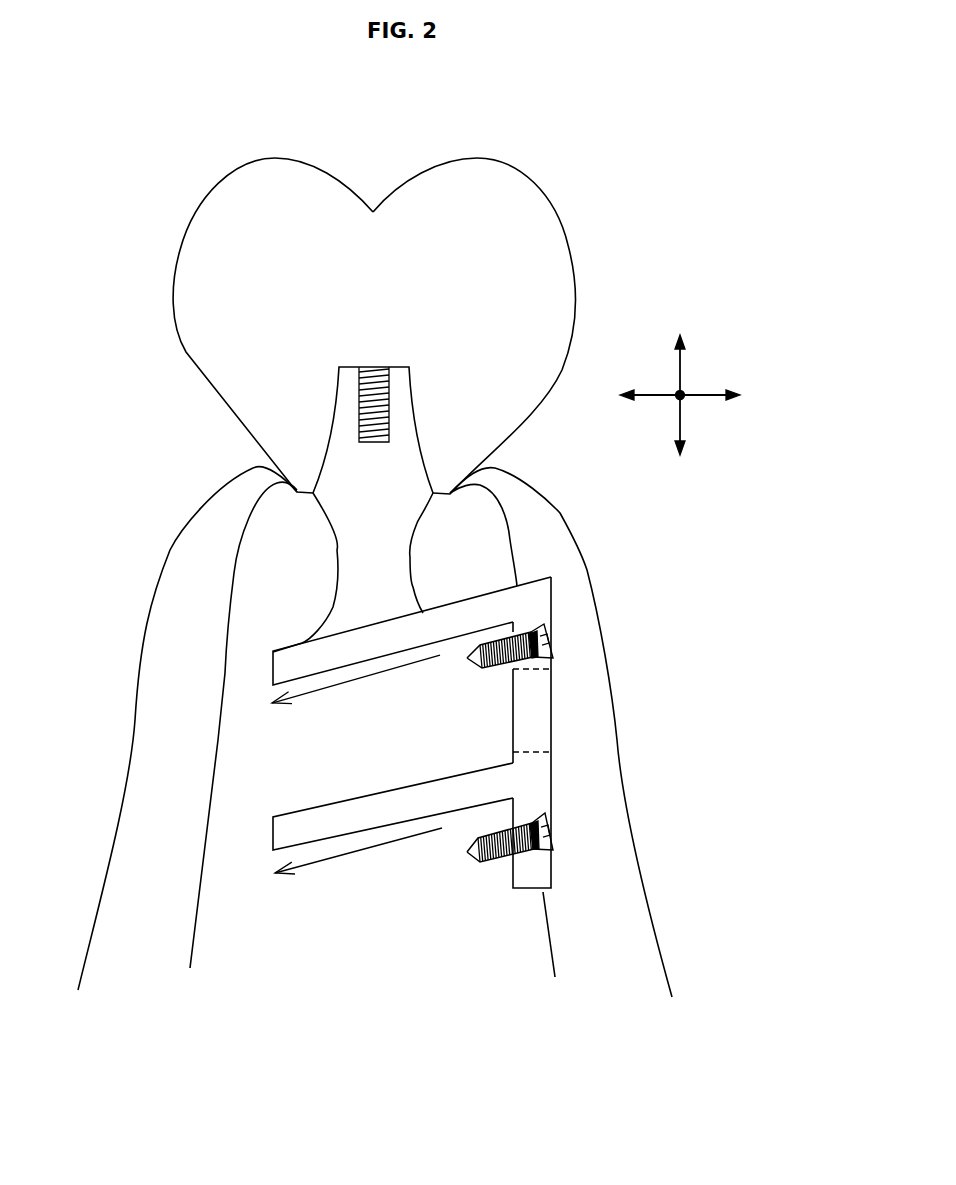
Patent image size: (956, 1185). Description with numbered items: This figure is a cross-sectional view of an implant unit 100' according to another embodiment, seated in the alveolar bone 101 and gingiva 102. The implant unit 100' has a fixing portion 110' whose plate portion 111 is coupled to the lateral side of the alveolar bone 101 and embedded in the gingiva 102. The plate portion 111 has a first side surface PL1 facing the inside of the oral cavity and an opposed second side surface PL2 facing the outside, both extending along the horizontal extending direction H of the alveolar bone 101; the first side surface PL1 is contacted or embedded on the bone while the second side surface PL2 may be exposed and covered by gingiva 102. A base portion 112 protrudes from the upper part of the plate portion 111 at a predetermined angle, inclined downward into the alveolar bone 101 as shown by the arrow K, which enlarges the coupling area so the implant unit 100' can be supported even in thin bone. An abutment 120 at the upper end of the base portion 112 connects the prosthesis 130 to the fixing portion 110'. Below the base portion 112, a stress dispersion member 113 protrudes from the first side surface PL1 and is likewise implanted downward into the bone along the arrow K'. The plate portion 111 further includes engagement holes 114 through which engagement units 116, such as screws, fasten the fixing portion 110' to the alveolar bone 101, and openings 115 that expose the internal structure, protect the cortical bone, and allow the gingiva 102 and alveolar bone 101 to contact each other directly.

The implant unit 100' is at (434, 561).
The prosthesis 130 is at (525, 260).
The abutment 120 is at (347, 438).
The alveolar bone 101 is at (253, 557).
The gingiva 102 is at (172, 720).
The fixing portion 110' is at (414, 769).
The plate portion 111 is at (537, 781).
The base portion 112 is at (273, 662).
The stress dispersion member 113 is at (350, 802).
The engagement hole 114 is at (552, 638).
The opening 115 is at (537, 703).
The engagement unit 116 is at (486, 652).
The first side surface PL1 is at (513, 725).
The second side surface PL2 is at (552, 732).
The arrow K is at (356, 715).
The arrow K' is at (358, 888).
The horizontal extending direction H is at (683, 389).